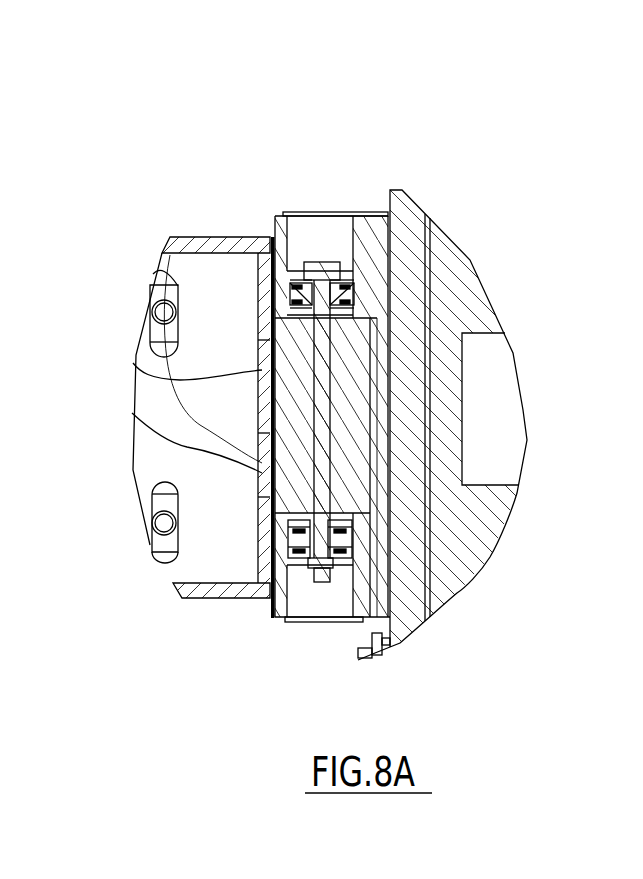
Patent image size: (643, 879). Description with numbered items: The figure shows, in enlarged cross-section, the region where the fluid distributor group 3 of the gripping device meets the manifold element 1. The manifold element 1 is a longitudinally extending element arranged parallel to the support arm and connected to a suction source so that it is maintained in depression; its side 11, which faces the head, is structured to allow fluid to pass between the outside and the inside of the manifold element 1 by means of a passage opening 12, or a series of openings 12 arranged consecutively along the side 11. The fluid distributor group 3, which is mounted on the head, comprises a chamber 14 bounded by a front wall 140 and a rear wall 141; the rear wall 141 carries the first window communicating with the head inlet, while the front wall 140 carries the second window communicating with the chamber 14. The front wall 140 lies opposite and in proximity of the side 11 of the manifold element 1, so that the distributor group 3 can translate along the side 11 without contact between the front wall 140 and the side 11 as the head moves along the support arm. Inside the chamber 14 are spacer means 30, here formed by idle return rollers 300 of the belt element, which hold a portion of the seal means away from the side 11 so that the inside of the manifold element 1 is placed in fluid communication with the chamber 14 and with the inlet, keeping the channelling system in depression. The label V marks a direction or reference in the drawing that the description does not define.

The manifold element 1 is at (156, 568).
The side 11 is at (262, 292).
The passage opening 12 is at (133, 413).
The chamber 14 is at (369, 318).
The front wall 140 is at (276, 220).
The rear wall 141 is at (390, 190).
The fluid distributor group 3 is at (322, 206).
The spacer means 30 is at (370, 610).
The idle return rollers 300 is at (347, 493).
The vertical direction V is at (274, 212).